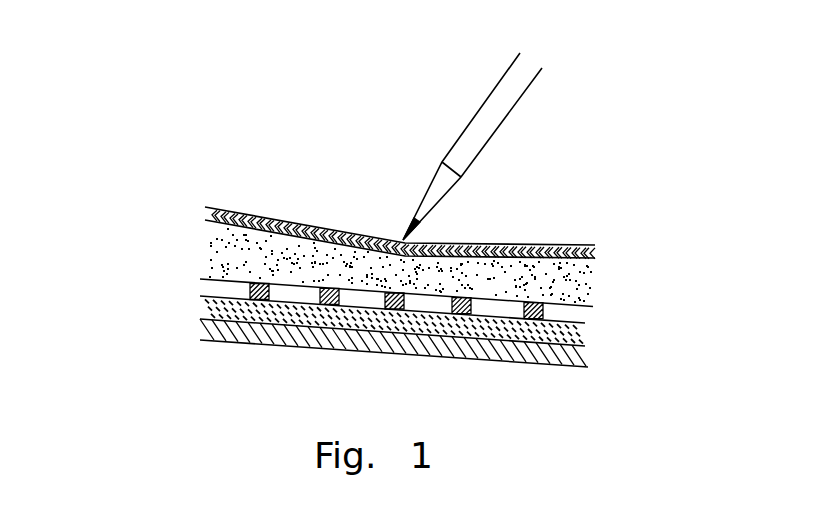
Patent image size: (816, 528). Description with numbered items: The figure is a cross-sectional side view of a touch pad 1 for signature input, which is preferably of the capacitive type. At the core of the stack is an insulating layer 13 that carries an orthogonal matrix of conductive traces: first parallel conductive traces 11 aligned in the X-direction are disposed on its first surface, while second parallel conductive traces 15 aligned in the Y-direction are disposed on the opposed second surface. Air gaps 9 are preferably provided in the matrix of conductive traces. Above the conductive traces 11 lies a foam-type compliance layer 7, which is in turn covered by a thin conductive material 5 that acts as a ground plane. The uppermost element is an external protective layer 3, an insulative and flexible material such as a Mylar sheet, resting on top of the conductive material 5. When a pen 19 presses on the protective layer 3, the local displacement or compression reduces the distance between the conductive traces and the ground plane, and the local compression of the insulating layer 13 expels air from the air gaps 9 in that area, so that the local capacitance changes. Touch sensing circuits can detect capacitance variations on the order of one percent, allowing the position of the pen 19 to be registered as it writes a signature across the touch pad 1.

The touch pad 1 is at (158, 345).
The external protective layer 3 is at (595, 244).
The thin conductive material 5 is at (594, 257).
The foam-type compliance layer 7 is at (560, 278).
The air gaps 9 is at (204, 285).
The first parallel conductive traces 11 is at (248, 282).
The insulating layer 13 is at (573, 335).
The second parallel conductive traces 15 is at (223, 333).
The pen 19 is at (488, 118).